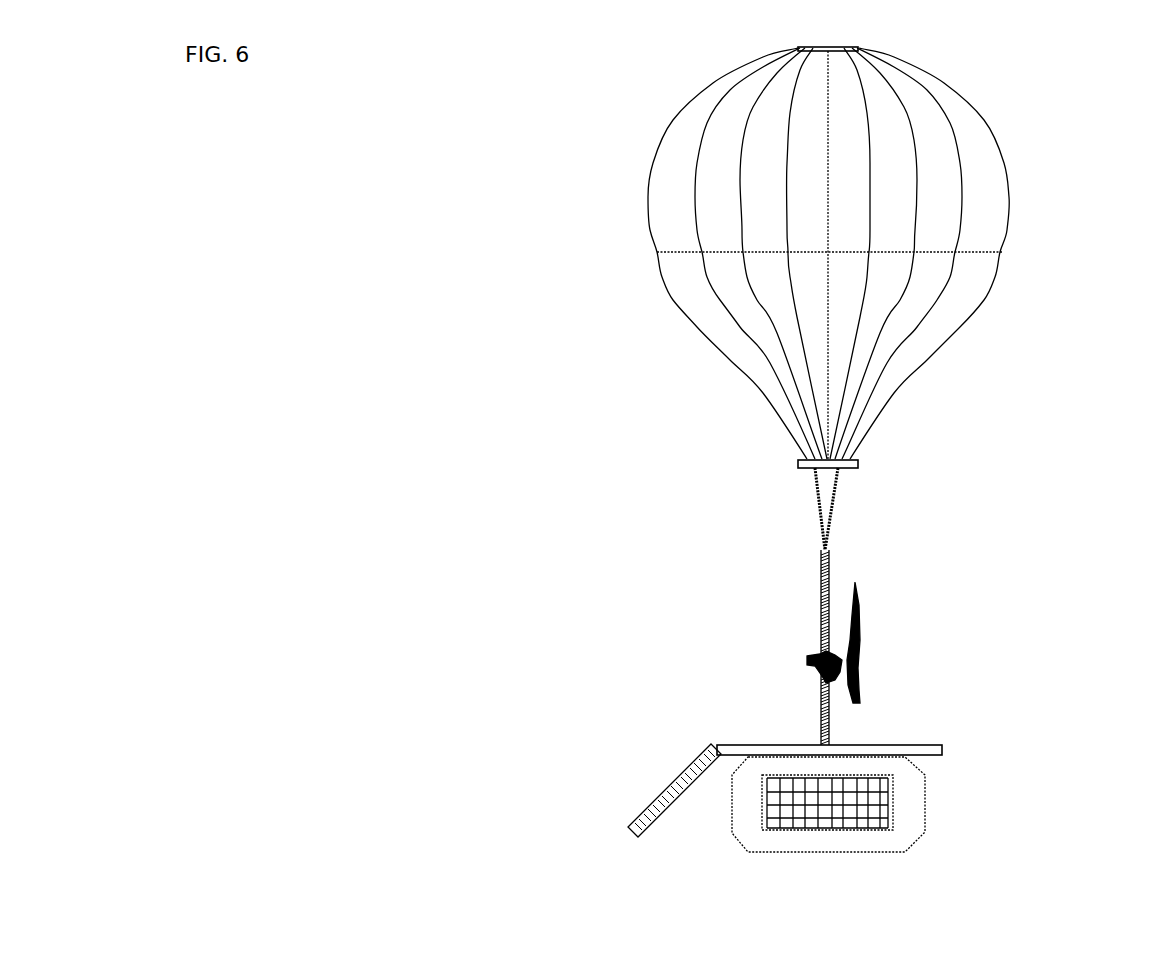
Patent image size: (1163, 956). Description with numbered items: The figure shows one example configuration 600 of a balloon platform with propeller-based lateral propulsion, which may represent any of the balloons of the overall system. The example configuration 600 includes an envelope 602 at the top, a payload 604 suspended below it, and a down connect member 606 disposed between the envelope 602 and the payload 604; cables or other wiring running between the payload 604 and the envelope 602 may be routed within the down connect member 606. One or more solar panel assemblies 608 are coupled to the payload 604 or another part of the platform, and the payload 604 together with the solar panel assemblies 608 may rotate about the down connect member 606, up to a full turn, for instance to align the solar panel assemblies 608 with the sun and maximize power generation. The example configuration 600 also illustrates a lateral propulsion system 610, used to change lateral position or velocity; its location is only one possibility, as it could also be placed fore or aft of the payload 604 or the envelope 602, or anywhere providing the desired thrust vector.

The example configuration 600 is at (272, 115).
The envelope 602 is at (968, 313).
The payload 604 is at (925, 775).
The down connect member 606 is at (767, 577).
The solar panel assemblies 608 is at (652, 800).
The lateral propulsion system 610 is at (895, 645).